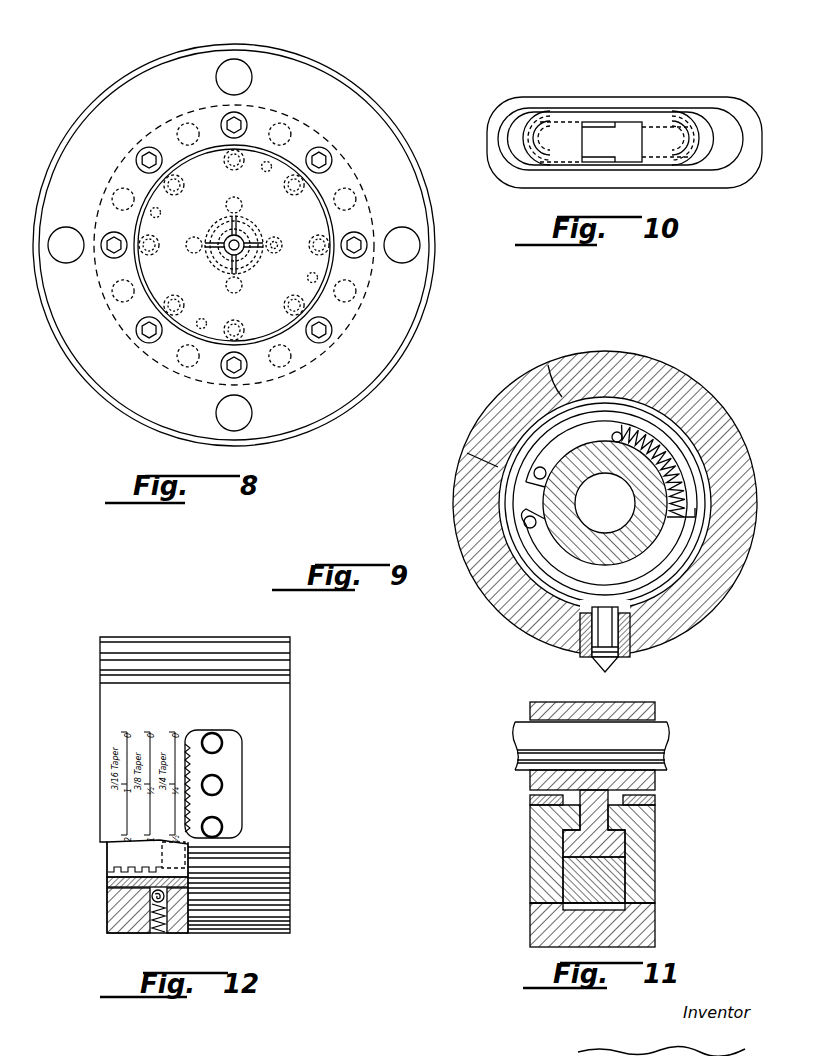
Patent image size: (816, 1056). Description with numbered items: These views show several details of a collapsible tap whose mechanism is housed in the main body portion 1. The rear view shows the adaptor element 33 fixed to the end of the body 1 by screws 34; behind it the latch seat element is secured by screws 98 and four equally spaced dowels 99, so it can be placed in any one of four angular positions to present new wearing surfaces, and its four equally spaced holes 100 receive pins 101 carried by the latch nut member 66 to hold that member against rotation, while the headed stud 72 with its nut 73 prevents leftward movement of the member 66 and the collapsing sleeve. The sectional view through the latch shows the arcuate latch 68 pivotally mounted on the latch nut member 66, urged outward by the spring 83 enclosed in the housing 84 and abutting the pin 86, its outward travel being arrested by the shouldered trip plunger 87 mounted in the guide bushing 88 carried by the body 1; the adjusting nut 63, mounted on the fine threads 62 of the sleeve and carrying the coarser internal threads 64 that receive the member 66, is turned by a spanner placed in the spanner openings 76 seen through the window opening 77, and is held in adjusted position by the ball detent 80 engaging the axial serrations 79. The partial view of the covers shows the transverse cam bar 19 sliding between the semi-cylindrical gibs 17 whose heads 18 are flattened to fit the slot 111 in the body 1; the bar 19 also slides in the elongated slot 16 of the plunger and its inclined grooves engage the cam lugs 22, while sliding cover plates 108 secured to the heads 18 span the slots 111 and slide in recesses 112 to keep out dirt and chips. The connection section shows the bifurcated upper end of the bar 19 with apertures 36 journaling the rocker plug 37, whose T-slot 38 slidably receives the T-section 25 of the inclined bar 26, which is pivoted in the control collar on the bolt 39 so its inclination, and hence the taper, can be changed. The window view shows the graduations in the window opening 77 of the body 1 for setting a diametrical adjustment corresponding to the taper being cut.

In FIG. 10, the main body portion 1 is at (549, 99).
In FIG. 9, the main body portion 1 is at (575, 352).
In FIG. 12, the main body portion 1 is at (117, 936).
In FIG. 10, the elongated slot 16 is at (672, 162).
In FIG. 10, the semi-cylindrical gibs 17 is at (649, 120).
In FIG. 10, the heads 18 is at (564, 122).
In FIG. 10, the transverse cam bar 19 is at (603, 150).
In FIG. 11, the transverse cam bar 19 is at (657, 800).
In FIG. 10, the cam lugs 22 is at (604, 121).
In FIG. 11, the T-section 25 is at (570, 843).
In FIG. 11, the bar 26 is at (650, 780).
In FIG. 8, the adaptor element 33 is at (297, 55).
In FIG. 8, the screws 34 is at (241, 117).
In FIG. 11, the apertures 36 is at (542, 900).
In FIG. 11, the rocker plug 37 is at (650, 863).
In FIG. 11, the T-slot 38 is at (625, 842).
In FIG. 11, the bolt 39 is at (667, 722).
In FIG. 12, the fine threads 62 is at (107, 878).
In FIG. 9, the adjusting nut 63 is at (670, 583).
In FIG. 12, the internal threads 64 is at (161, 855).
In FIG. 9, the latch nut member 66 is at (545, 507).
In FIG. 9, the arcuate latch 68 is at (627, 595).
In FIG. 8, the headed stud 72 is at (220, 230).
In FIG. 8, the nut 73 is at (243, 276).
In FIG. 12, the spanner openings 76 is at (226, 827).
In FIG. 9, the window opening 77 is at (468, 448).
In FIG. 12, the window opening 77 is at (243, 745).
In FIG. 12, the serrations 79 is at (192, 778).
In FIG. 12, the ball detent 80 is at (147, 858).
In FIG. 9, the spring 83 is at (680, 519).
In FIG. 9, the housing 84 is at (614, 420).
In FIG. 9, the pin 86 is at (611, 437).
In FIG. 9, the trip plunger 87 is at (592, 654).
In FIG. 9, the guide bushing 88 is at (630, 656).
In FIG. 8, the screws 98 is at (153, 236).
In FIG. 8, the dowels 99 is at (266, 171).
In FIG. 8, the holes 100 is at (272, 236).
In FIG. 8, the pins 101 is at (271, 250).
In FIG. 10, the sliding cover plates 108 is at (714, 184).
In FIG. 10, the slot 111 is at (598, 120).
In FIG. 10, the recesses 112 is at (715, 108).